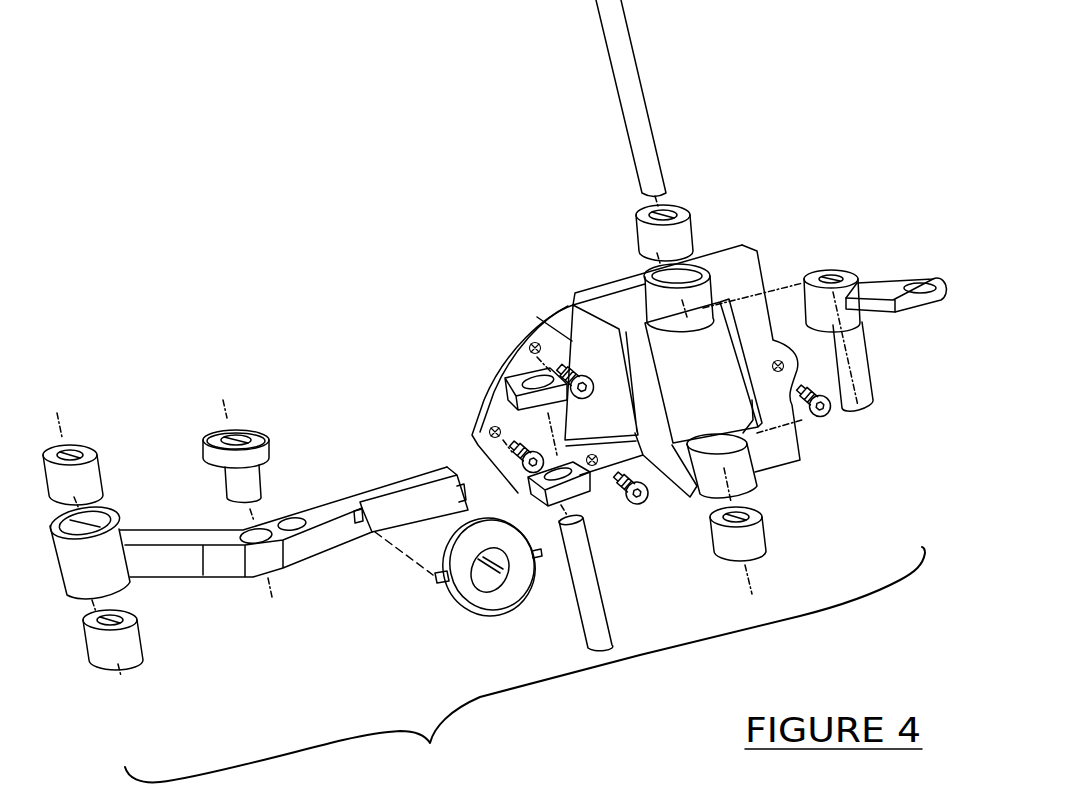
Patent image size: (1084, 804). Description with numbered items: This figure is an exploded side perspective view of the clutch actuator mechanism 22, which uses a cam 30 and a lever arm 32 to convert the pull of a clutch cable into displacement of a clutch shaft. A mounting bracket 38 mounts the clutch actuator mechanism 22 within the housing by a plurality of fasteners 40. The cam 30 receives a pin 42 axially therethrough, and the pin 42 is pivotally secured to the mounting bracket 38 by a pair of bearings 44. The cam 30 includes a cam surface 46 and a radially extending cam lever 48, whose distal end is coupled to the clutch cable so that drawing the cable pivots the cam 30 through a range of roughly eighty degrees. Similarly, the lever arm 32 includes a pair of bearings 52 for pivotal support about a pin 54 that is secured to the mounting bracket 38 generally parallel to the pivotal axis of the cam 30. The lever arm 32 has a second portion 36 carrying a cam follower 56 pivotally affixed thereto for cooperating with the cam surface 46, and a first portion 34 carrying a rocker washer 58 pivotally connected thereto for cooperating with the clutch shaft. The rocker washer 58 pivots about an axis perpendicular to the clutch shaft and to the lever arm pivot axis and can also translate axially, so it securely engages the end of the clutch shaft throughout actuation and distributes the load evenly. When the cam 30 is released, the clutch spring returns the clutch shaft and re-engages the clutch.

The clutch actuator mechanism 22 is at (525, 664).
The cam 30 is at (875, 299).
The lever arm 32 is at (258, 515).
The first portion 34 is at (389, 468).
The second portion 36 is at (225, 429).
The mounting bracket 38 is at (751, 253).
The fasteners 40 is at (565, 358).
The pin 42 is at (612, 66).
The bearings 44 is at (633, 236).
The cam surface 46 is at (868, 350).
The cam lever 48 is at (885, 290).
The bearings 52 is at (97, 463).
The pin 54 is at (603, 593).
The cam follower 56 is at (270, 428).
The rocker washer 58 is at (498, 612).